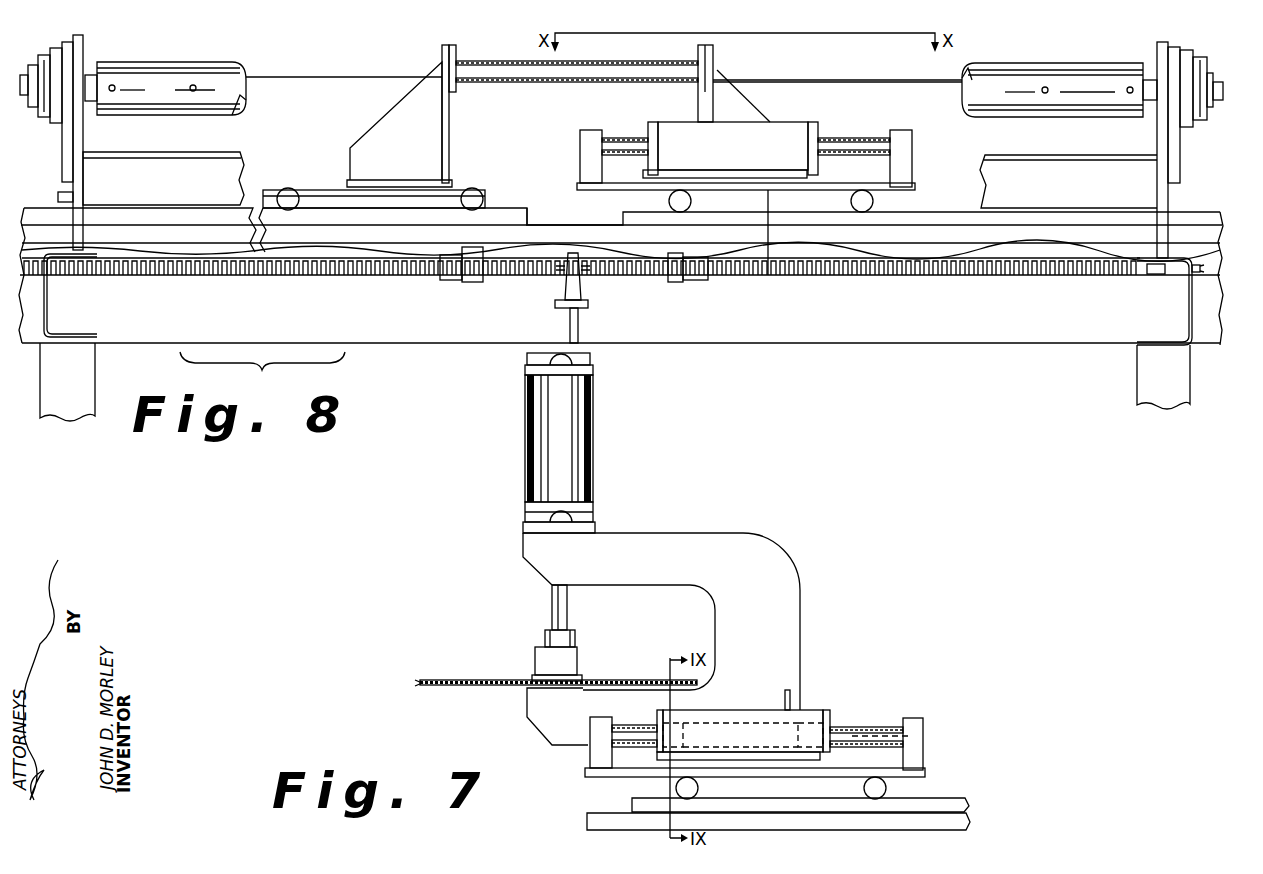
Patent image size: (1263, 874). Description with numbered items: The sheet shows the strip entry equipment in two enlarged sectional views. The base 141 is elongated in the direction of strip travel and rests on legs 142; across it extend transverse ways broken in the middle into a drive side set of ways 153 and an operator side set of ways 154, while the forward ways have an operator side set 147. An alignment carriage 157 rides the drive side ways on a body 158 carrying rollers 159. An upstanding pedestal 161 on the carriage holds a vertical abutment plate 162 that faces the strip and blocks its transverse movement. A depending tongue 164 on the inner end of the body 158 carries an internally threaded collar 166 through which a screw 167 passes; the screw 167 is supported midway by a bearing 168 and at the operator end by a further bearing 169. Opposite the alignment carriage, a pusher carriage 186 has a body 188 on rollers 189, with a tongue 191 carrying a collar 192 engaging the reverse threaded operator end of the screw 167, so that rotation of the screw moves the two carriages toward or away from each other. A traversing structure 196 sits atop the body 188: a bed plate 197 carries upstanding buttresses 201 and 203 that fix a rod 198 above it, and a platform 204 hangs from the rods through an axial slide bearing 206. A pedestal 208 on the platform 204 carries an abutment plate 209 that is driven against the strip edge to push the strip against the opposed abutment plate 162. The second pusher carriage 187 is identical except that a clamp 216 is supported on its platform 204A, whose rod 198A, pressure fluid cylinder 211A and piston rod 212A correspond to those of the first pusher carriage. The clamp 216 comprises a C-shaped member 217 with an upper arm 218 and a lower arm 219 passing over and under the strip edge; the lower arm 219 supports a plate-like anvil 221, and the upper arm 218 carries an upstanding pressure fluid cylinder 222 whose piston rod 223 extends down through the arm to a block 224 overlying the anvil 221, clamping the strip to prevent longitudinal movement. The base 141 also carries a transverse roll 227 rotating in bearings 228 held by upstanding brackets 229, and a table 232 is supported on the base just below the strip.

In FIG. 8, the base 141 is at (1010, 335).
In FIG. 8, the legs 142 is at (1157, 362).
In FIG. 7, the operator side set of ways 147 is at (949, 795).
In FIG. 8, the drive side set of ways 153 is at (535, 201).
In FIG. 8, the operator side set of ways 154 is at (1219, 213).
In FIG. 8, the alignment carriage 157 is at (325, 162).
In FIG. 8, the body 158 is at (322, 190).
In FIG. 8, the rollers 159 is at (288, 190).
In FIG. 8, the pedestal 161 is at (399, 124).
In FIG. 8, the abutment plate 162 is at (453, 52).
In FIG. 8, the tongue 164 is at (472, 272).
In FIG. 8, the collar 166 is at (452, 276).
In FIG. 8, the screw 167 is at (312, 281).
In FIG. 8, the bearing 168 is at (580, 280).
In FIG. 8, the bearing 169 is at (1200, 280).
In FIG. 8, the pusher carriage 186 is at (810, 75).
In FIG. 7, the pusher carriage 187 is at (774, 736).
In FIG. 8, the body 188 is at (769, 280).
In FIG. 8, the rollers 189 is at (667, 197).
In FIG. 8, the tongue 191 is at (674, 284).
In FIG. 8, the collar 192 is at (700, 281).
In FIG. 8, the traversing structure 196 is at (745, 151).
In FIG. 8, the bed plate 197 is at (900, 192).
In FIG. 8, the rod 198 is at (876, 140).
In FIG. 7, the rod 198A is at (898, 727).
In FIG. 8, the buttress 201 is at (580, 142).
In FIG. 8, the buttress 203 is at (912, 155).
In FIG. 8, the platform 204 is at (793, 173).
In FIG. 7, the platform 204A is at (822, 757).
In FIG. 8, the axial slide bearing 206 is at (733, 148).
In FIG. 8, the pedestal 208 is at (746, 112).
In FIG. 8, the abutment plate 209 is at (698, 57).
In FIG. 7, the pressure fluid cylinder 211A is at (712, 725).
In FIG. 7, the piston rod 212A is at (852, 730).
In FIG. 7, the clamp 216 is at (686, 639).
In FIG. 7, the C-shaped member 217 is at (783, 624).
In FIG. 7, the upper arm 218 is at (611, 541).
In FIG. 7, the lower arm 219 is at (578, 735).
In FIG. 7, the anvil 221 is at (530, 684).
In FIG. 7, the pressure fluid cylinder 222 is at (594, 428).
In FIG. 7, the piston rod 223 is at (560, 614).
In FIG. 7, the block 224 is at (545, 662).
In FIG. 8, the roll 227 is at (1063, 108).
In FIG. 8, the bearings 228 is at (1195, 57).
In FIG. 8, the brackets 229 is at (1157, 177).
In FIG. 8, the table 232 is at (341, 72).